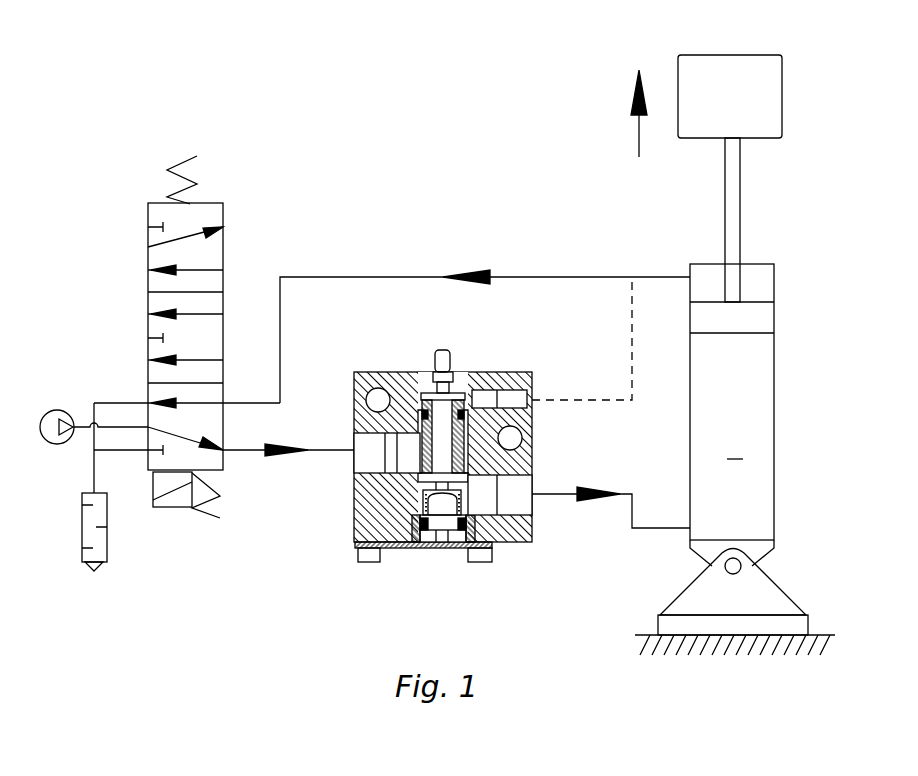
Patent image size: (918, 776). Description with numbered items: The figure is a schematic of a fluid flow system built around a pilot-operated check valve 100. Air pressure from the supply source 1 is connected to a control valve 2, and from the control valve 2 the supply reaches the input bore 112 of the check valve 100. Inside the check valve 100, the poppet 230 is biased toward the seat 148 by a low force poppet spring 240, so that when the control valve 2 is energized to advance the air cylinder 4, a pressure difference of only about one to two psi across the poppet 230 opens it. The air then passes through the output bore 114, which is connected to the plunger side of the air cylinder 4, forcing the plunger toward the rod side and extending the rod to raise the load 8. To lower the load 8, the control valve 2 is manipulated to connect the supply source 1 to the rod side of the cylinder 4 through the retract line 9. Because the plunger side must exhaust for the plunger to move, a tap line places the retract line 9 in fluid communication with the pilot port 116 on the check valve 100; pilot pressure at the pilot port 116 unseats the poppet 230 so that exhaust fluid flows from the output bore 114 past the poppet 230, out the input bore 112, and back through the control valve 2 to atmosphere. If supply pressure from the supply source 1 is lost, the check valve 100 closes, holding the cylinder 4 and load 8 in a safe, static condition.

The supply source 1 is at (62, 410).
The control valve 2 is at (215, 203).
The air cylinder 4 is at (735, 396).
The load 8 is at (698, 138).
The retract line 9 is at (410, 275).
The check valve 100 is at (429, 580).
The input bore 112 is at (368, 444).
The output bore 114 is at (532, 503).
The pilot port 116 is at (532, 402).
The seat 148 is at (466, 456).
The poppet 230 is at (424, 498).
The poppet spring 240 is at (356, 548).